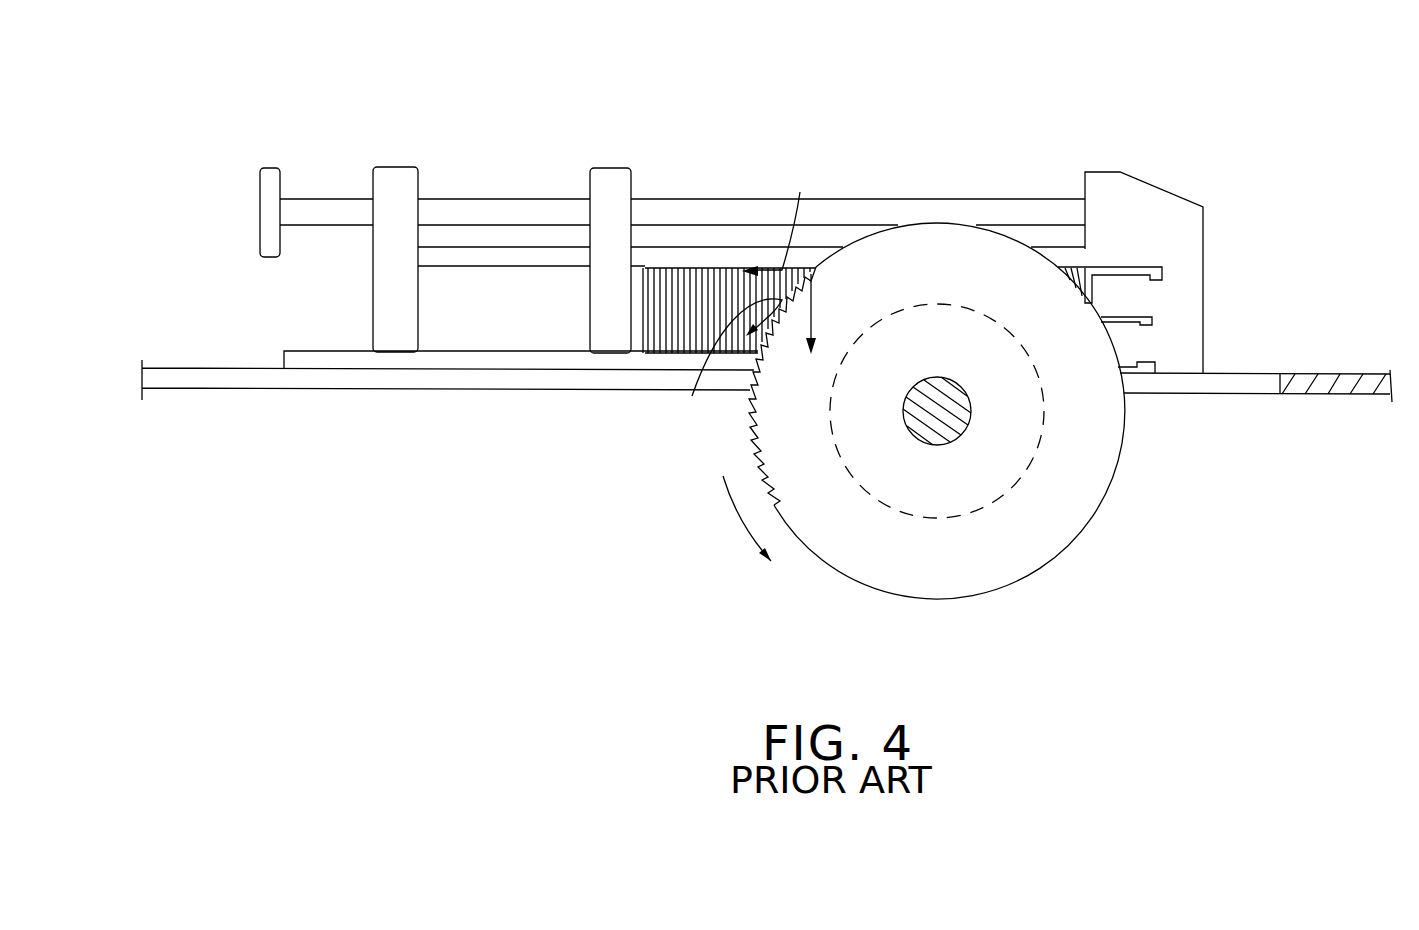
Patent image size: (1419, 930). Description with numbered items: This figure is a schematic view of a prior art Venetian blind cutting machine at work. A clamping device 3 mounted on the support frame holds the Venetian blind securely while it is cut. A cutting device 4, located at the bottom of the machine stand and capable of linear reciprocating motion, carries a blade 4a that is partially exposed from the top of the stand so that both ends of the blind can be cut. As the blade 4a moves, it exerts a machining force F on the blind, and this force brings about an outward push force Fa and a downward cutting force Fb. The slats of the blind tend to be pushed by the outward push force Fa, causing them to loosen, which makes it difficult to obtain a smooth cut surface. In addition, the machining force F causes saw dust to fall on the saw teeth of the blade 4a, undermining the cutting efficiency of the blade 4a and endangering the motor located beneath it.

The clamping device 3 is at (726, 188).
The cutting device 4 is at (961, 441).
The blade 4a is at (1032, 548).
The outward push force Fa is at (781, 219).
The downward cutting force Fb is at (830, 314).
The machining force F is at (733, 367).